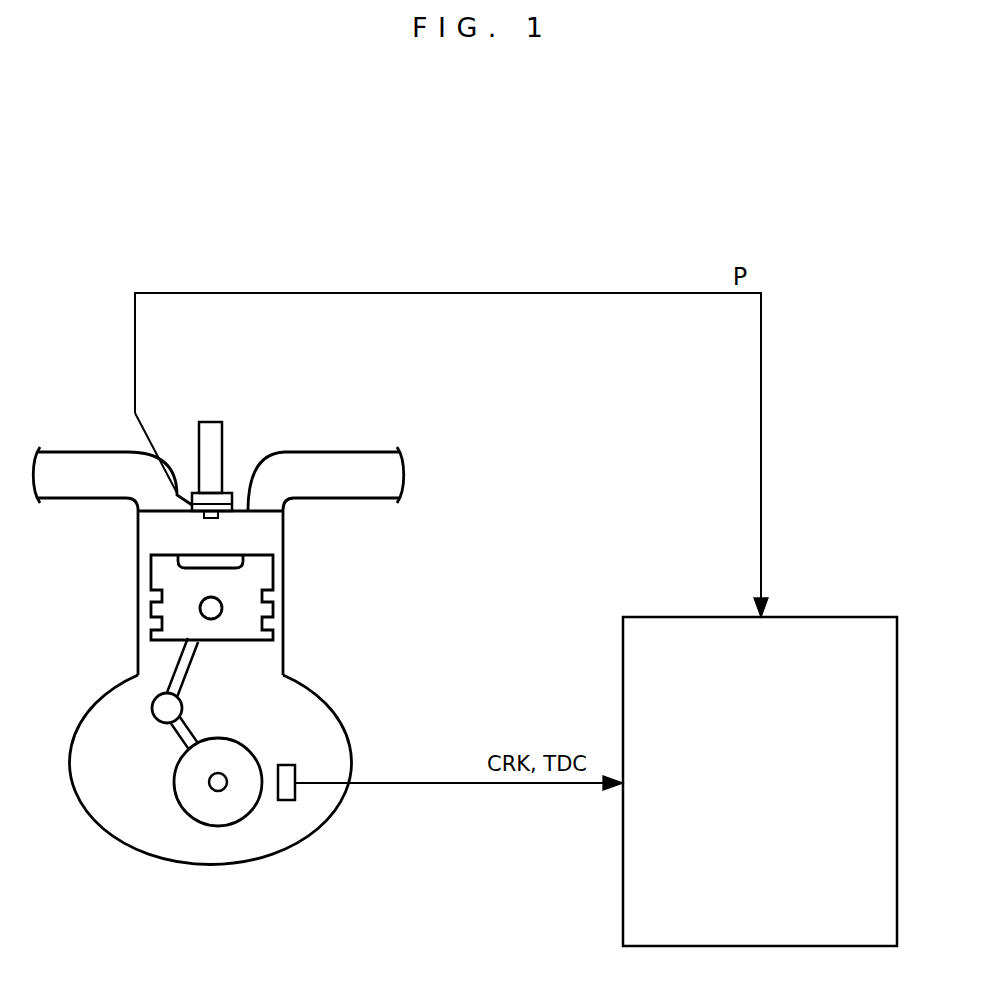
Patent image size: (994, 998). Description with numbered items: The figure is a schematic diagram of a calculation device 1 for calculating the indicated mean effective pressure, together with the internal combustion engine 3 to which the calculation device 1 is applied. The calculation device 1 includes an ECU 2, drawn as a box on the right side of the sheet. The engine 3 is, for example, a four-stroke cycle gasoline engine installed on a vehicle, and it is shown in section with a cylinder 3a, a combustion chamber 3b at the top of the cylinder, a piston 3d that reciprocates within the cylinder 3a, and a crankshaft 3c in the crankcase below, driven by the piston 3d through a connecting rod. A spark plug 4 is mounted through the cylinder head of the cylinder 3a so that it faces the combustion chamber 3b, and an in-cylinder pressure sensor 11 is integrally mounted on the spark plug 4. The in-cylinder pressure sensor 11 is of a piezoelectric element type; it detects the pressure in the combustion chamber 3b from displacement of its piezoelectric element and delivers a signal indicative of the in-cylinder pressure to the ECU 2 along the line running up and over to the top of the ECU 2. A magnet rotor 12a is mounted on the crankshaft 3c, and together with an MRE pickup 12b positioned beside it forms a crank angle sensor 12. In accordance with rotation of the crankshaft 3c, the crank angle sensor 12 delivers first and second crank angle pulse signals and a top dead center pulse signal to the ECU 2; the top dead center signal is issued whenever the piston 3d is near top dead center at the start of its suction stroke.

The calculation device 1 is at (812, 170).
The ECU 2 is at (852, 617).
The internal combustion engine 3 is at (101, 845).
The cylinder 3a is at (282, 556).
The combustion chamber 3b is at (150, 542).
The crankshaft 3c is at (224, 780).
The piston 3d is at (153, 628).
The spark plug 4 is at (205, 422).
The in-cylinder pressure sensor 11 is at (229, 493).
The crank angle sensor 12 is at (245, 846).
The magnet rotor 12a is at (232, 826).
The MRE pickup 12b is at (286, 800).